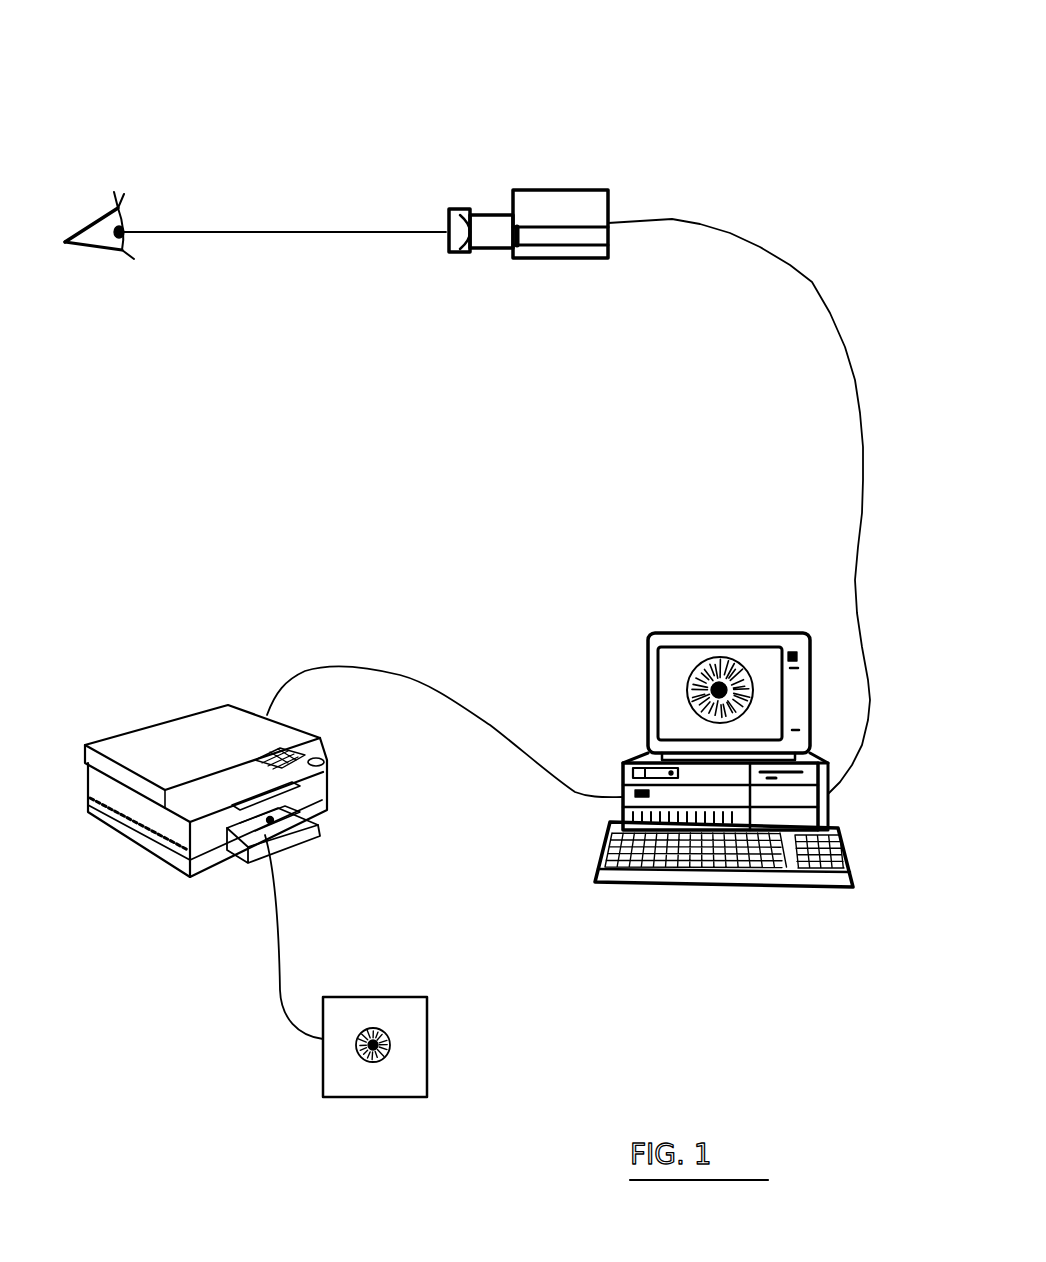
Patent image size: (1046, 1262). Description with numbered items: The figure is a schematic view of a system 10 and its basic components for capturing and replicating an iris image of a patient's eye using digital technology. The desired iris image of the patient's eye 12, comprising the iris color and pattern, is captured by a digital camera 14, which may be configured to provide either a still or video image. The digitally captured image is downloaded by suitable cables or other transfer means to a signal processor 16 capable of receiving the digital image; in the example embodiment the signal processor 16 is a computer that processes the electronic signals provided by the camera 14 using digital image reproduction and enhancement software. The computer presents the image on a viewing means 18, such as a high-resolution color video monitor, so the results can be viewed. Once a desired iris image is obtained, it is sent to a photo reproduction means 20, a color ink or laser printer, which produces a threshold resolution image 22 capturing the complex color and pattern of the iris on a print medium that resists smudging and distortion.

The system 10 is at (713, 145).
The patient's eye 12 is at (108, 246).
The digital camera 14 is at (552, 197).
The signal processor 16 is at (807, 802).
The viewing means 18 is at (655, 687).
The photo reproduction means 20 is at (207, 737).
The threshold resolution image 22 is at (415, 1064).